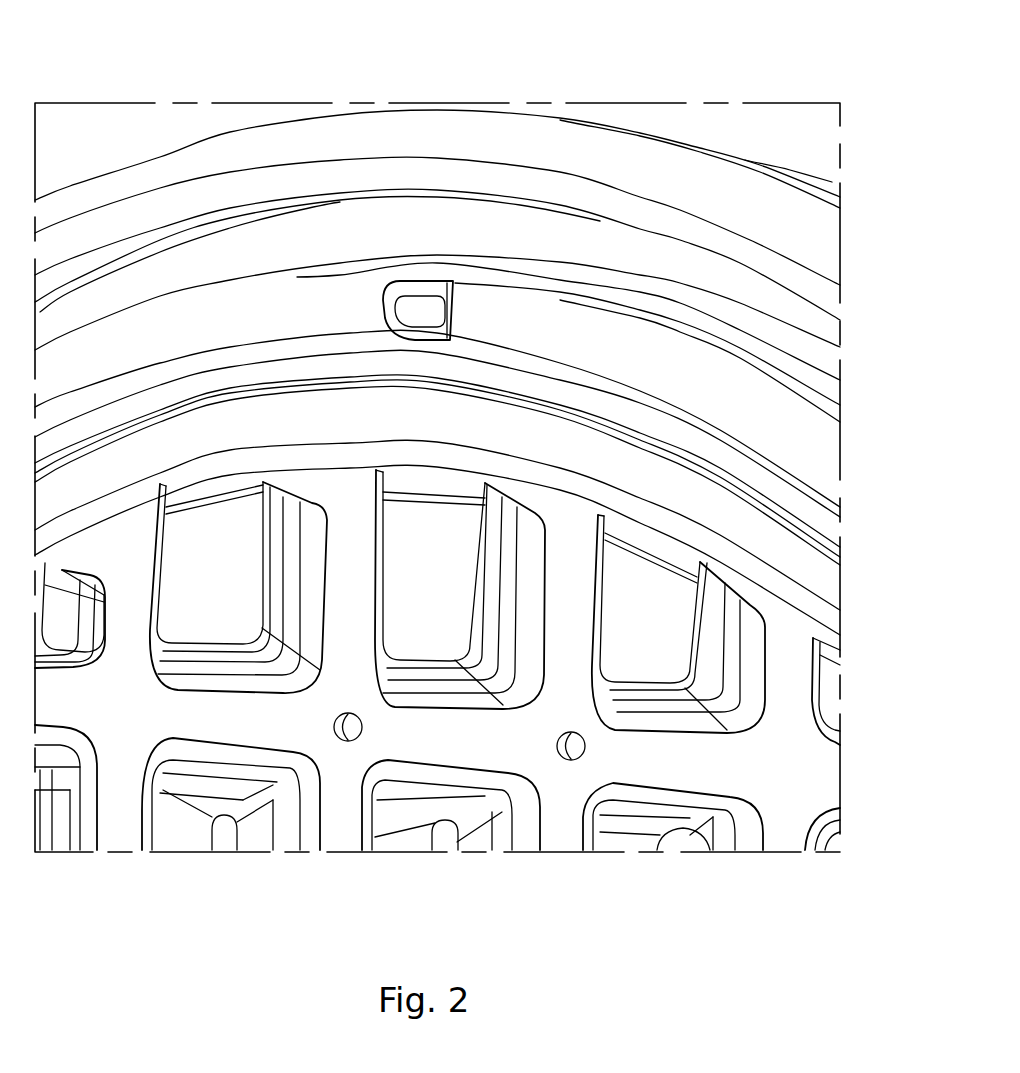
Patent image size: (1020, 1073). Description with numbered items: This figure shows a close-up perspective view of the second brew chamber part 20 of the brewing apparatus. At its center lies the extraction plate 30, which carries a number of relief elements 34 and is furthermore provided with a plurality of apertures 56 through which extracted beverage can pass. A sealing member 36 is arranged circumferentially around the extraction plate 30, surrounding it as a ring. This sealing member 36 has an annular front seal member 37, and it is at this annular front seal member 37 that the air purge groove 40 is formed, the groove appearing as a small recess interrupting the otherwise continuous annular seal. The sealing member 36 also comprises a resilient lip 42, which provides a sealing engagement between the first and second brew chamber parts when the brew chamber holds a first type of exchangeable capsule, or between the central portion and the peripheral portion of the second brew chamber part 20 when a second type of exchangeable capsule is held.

The second brew chamber part 20 is at (135, 122).
The extraction plate 30 is at (785, 768).
The relief elements 34 is at (647, 627).
The sealing member 36 is at (353, 230).
The annular front seal member 37 is at (606, 355).
The air purge groove 40 is at (423, 313).
The resilient lip 42 is at (545, 192).
The apertures 56 is at (349, 740).